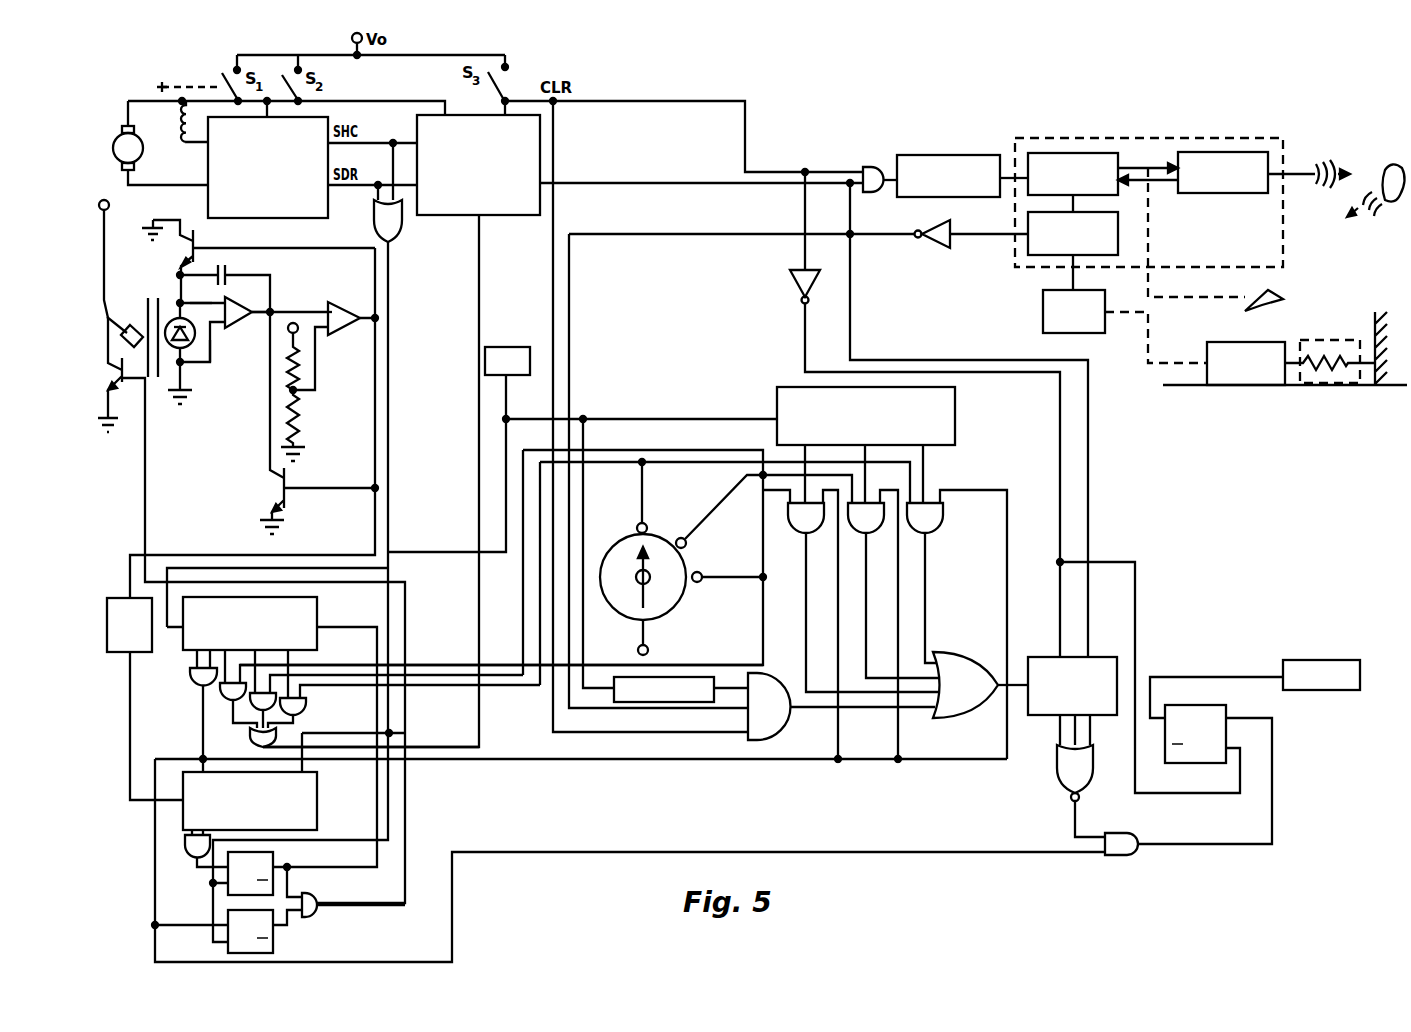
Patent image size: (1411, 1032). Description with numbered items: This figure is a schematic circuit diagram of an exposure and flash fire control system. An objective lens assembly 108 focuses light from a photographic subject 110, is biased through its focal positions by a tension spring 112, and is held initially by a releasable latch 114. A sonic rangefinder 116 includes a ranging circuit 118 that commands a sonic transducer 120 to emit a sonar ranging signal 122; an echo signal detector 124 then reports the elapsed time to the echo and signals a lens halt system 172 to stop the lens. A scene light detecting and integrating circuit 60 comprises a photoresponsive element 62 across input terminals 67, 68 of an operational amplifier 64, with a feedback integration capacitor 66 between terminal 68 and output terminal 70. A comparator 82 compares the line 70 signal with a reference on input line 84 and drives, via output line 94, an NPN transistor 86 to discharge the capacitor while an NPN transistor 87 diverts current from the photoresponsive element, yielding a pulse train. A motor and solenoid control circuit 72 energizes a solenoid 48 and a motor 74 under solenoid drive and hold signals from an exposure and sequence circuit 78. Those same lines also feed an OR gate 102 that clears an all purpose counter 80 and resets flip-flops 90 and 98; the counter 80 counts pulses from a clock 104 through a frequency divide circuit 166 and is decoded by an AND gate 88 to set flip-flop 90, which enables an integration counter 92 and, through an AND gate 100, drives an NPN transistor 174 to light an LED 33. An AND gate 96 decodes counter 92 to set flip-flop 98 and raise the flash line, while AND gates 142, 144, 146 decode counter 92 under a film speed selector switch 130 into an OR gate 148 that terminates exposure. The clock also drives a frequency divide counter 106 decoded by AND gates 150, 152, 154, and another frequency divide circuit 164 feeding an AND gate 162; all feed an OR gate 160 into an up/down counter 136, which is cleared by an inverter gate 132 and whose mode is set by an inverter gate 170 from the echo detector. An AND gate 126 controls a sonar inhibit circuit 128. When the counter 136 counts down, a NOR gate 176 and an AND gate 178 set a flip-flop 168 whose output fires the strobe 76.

The LED 33 is at (141, 316).
The solenoid 48 is at (171, 122).
The scene light detecting and integrating circuit 60 is at (341, 238).
The photoresponsive element 62 is at (178, 318).
The operational amplifier 64 is at (237, 302).
The feedback integration capacitor 66 is at (230, 272).
The input terminal 67 is at (214, 350).
The input terminal 68 is at (212, 303).
The output terminal 70 is at (262, 316).
The motor and solenoid control circuit 72 is at (268, 218).
The motor 74 is at (143, 155).
The strobe 76 is at (1318, 650).
The exposure and sequence circuit 78 is at (511, 215).
The all purpose counter 80 is at (317, 797).
The comparator 82 is at (333, 306).
The input line 84 is at (316, 360).
The NPN transistor 86 is at (288, 497).
The NPN transistor 87 is at (196, 240).
The AND gate 88 is at (192, 860).
The flip-flop 90 is at (274, 855).
The integration counter 92 is at (317, 637).
The output line 94 is at (357, 314).
The AND gate 96 is at (191, 672).
The flip-flop 98 is at (276, 948).
The AND gate 100 is at (310, 893).
The OR gate 102 is at (399, 230).
The clock 104 is at (503, 347).
The frequency divide counter 106 is at (955, 420).
The objective lens assembly 108 is at (1230, 342).
The photographic subject 110 is at (1390, 201).
The tension spring 112 is at (1312, 383).
The releasable latch 114 is at (1284, 297).
The sonic rangefinder 116 is at (1224, 134).
The ranging circuit 118 is at (1060, 150).
The sonic transducer 120 is at (1215, 194).
The sonar ranging signal 122 is at (1334, 165).
The echo signal detector 124 is at (1118, 236).
The AND gate 126 is at (868, 166).
The sonar inhibit circuit 128 is at (937, 155).
The film speed selector switch 130 is at (617, 546).
The inverter gate 132 is at (790, 281).
The up/down counter 136 is at (1050, 718).
The AND gate 142 is at (224, 700).
The AND gate 144 is at (252, 712).
The AND gate 146 is at (306, 711).
The OR gate 148 is at (274, 736).
The AND gate 150 is at (792, 530).
The AND gate 152 is at (878, 535).
The AND gate 154 is at (943, 524).
The OR gate 160 is at (975, 651).
The AND gate 162 is at (791, 722).
The frequency divide circuit 164 is at (672, 703).
The frequency divide circuit 166 is at (108, 607).
The flip-flop 168 is at (1228, 710).
The inverter gate 170 is at (925, 245).
The lens halt system 172 is at (1043, 312).
The NPN transistor 174 is at (133, 397).
The NOR gate 176 is at (1056, 770).
The AND gate 178 is at (1112, 833).